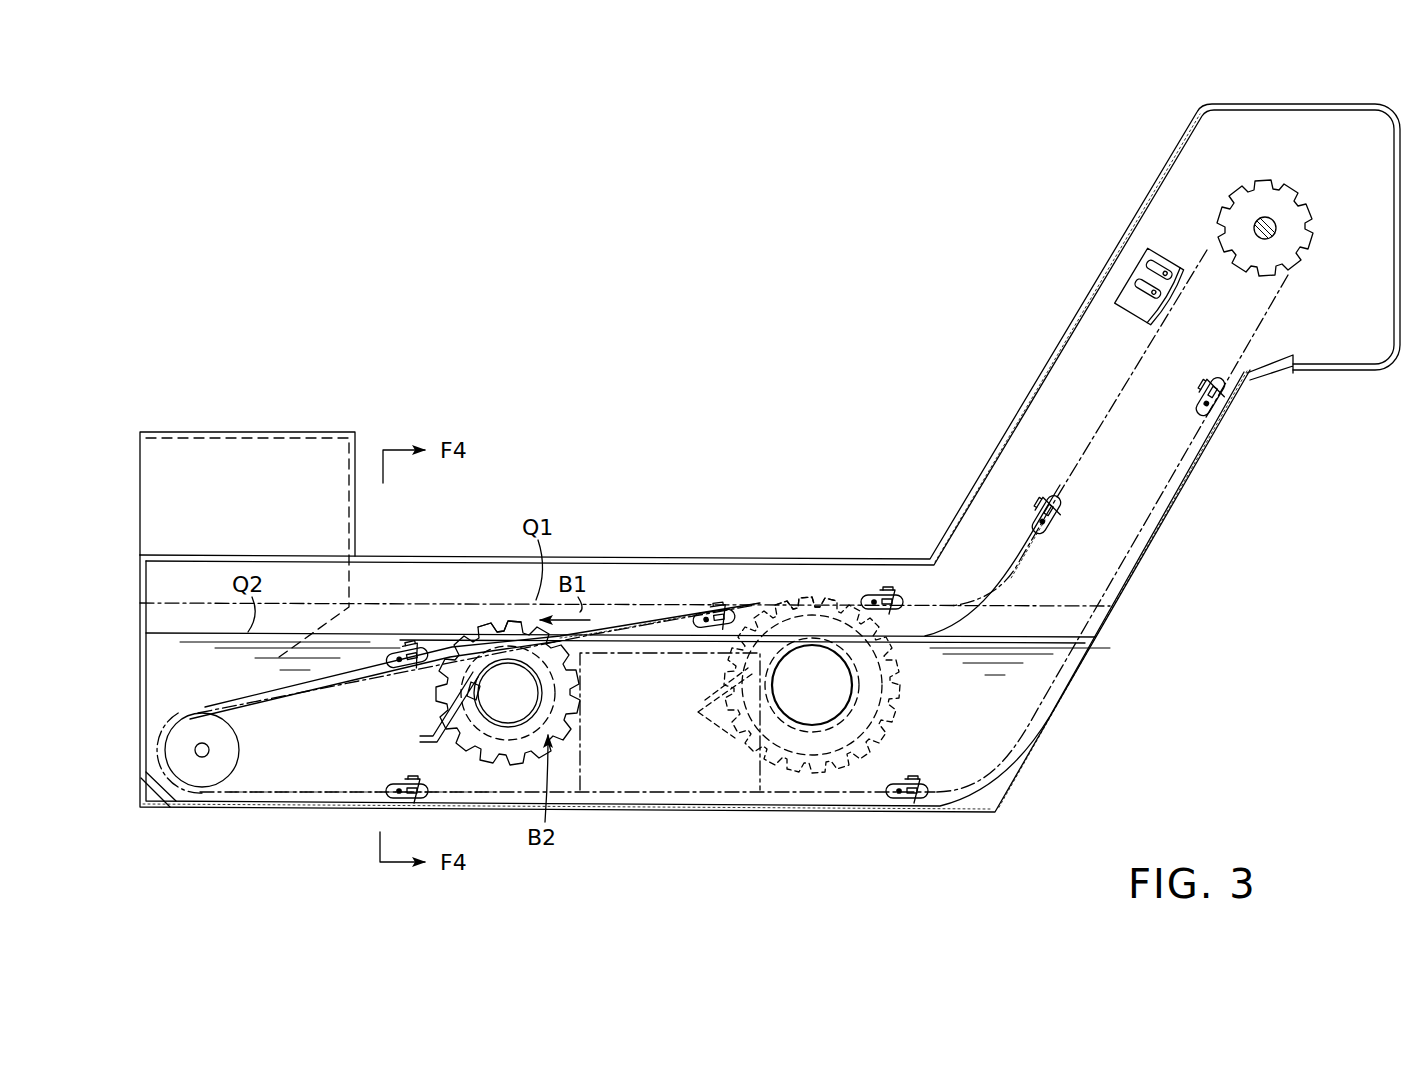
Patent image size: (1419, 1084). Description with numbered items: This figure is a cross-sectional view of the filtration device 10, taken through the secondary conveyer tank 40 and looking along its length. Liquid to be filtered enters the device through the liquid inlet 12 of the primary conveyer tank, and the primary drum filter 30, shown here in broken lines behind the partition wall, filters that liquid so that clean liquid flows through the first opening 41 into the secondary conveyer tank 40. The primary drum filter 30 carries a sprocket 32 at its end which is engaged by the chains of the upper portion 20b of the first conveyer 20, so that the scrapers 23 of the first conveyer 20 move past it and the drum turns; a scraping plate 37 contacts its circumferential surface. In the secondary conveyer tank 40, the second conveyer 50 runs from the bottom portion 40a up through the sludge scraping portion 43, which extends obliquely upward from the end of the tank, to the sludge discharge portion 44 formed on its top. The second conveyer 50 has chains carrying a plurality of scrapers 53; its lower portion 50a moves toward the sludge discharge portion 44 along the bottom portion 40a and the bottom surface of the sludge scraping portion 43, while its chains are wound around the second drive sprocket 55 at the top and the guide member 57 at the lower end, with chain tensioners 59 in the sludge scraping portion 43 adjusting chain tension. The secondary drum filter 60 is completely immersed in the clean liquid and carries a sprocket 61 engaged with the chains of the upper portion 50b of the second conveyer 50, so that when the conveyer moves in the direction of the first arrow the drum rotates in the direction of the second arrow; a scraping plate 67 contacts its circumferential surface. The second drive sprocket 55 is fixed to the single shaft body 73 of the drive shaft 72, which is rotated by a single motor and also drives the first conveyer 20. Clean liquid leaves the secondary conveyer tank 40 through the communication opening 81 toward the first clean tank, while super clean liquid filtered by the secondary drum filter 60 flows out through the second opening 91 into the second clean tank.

The filtration device 10 is at (782, 257).
The liquid inlet 12 is at (152, 490).
The first conveyer 20 is at (848, 597).
The upper portion of the first conveyer 20b is at (955, 604).
The scrapers 23 is at (893, 594).
The primary drum filter 30 is at (900, 673).
The sprocket 32 is at (800, 598).
The scraping plate 37 is at (722, 680).
The secondary conveyer tank 40 is at (727, 812).
The bottom portion of the secondary conveyer tank 40a is at (870, 810).
The first opening 41 is at (805, 722).
The sludge scraping portion 43 is at (1072, 318).
The sludge discharge portion 44 is at (1322, 358).
The second conveyer 50 is at (445, 630).
The lower portion of the second conveyer 50a is at (320, 797).
The upper portion of the second conveyer 50b is at (605, 632).
The scrapers 53 is at (405, 647).
The second drive sprocket 55 is at (1303, 208).
The guide member 57 is at (205, 765).
The chain tensioners 59 is at (1180, 295).
The secondary drum filter 60 is at (578, 692).
The sprocket 61 is at (497, 622).
The scraping plate 67 is at (440, 690).
The drive shaft 72 is at (1282, 238).
The shaft body 73 is at (1262, 222).
The communication opening 81 is at (582, 760).
The second opening 91 is at (497, 722).